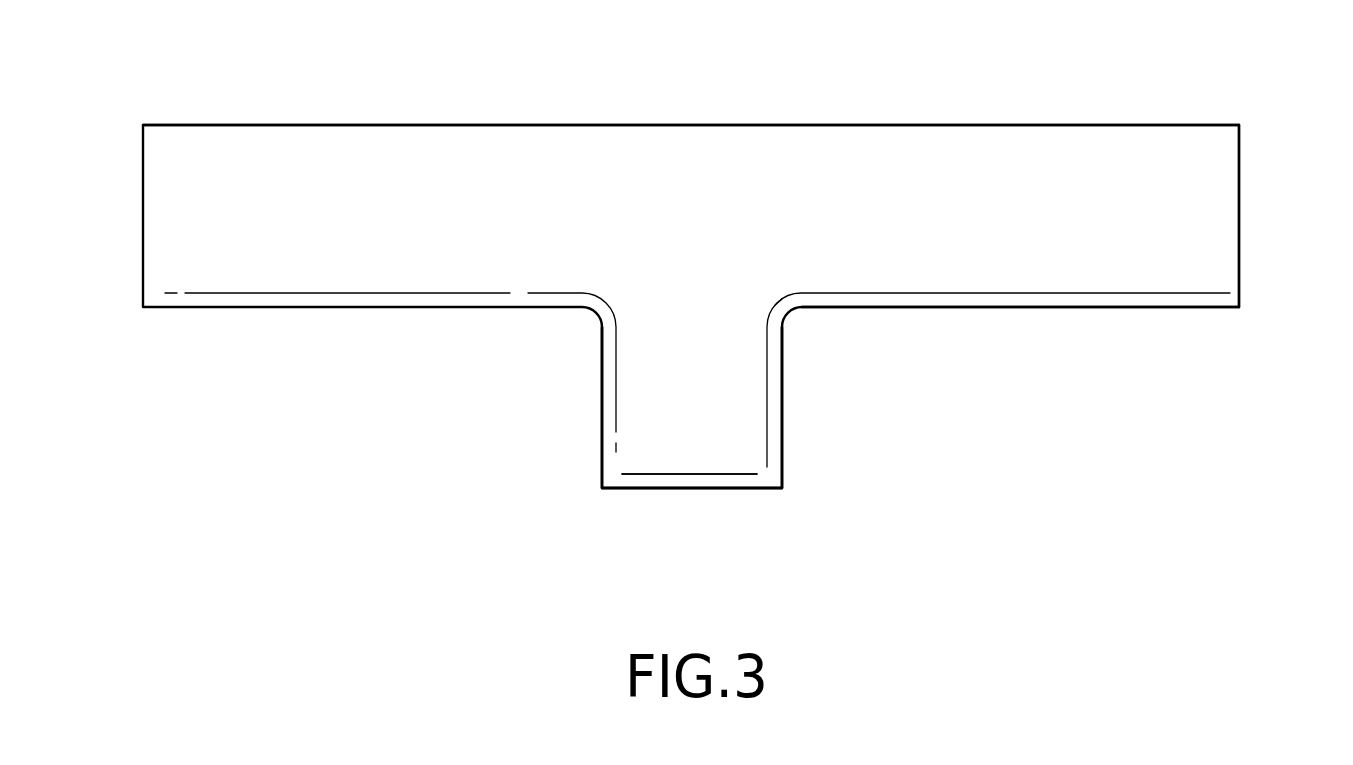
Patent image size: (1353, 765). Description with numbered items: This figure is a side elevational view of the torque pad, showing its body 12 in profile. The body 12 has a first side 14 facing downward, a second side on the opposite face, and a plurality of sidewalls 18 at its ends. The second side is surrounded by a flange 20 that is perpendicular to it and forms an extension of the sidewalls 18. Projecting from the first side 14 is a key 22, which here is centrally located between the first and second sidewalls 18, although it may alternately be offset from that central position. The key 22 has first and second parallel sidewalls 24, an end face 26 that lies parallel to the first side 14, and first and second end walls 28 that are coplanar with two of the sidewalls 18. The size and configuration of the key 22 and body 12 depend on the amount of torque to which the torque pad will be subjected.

The body 12 is at (281, 262).
The first side 14 is at (980, 307).
The sidewalls 18 is at (1240, 218).
The flange 20 is at (1063, 129).
The key 22 is at (555, 486).
The first and second parallel sidewalls 24 is at (600, 385).
The end face 26 is at (672, 490).
The first and second end walls 28 is at (728, 443).